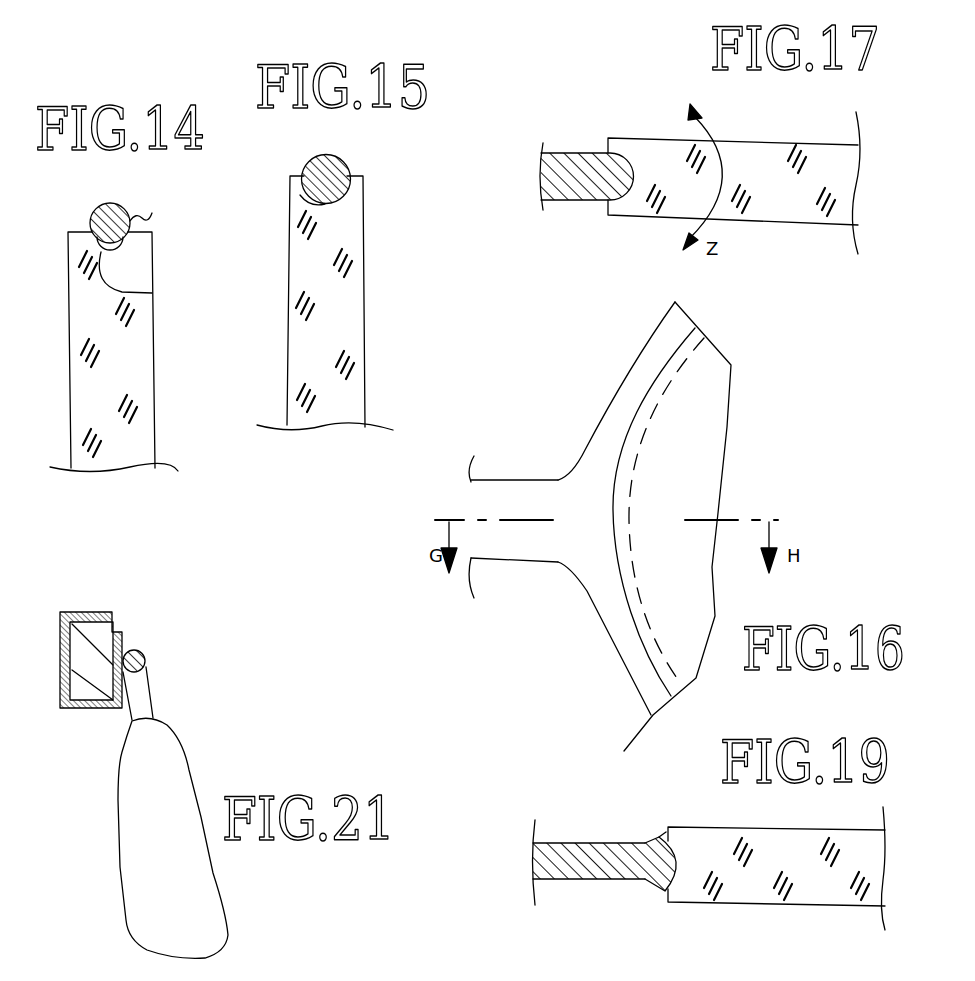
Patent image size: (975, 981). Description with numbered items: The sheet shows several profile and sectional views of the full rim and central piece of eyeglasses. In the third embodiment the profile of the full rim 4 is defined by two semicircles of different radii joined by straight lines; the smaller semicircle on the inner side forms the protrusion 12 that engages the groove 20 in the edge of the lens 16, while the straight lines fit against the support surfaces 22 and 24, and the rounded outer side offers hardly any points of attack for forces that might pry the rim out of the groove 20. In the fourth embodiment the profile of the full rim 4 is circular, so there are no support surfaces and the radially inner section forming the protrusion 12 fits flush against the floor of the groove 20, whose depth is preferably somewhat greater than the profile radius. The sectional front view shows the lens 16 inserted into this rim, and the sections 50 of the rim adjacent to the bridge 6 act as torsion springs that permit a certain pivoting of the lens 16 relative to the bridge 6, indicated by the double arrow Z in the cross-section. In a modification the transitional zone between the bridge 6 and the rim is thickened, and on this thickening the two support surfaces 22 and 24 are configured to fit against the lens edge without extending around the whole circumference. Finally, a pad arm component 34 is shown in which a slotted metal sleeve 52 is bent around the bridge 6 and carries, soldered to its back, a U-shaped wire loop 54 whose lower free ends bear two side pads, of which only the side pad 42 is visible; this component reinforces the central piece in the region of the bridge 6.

In FIG. 14, the full rim 4 is at (113, 202).
In FIG. 15, the full rim 4 is at (355, 163).
In FIG. 16, the full rim 4 is at (614, 677).
In FIG. 16, the bridge 6 is at (500, 496).
In FIG. 19, the bridge 6 is at (570, 855).
In FIG. 21, the bridge 6 is at (93, 637).
In FIG. 14, the protrusion 12 is at (102, 250).
In FIG. 15, the protrusion 12 is at (310, 174).
In FIG. 17, the protrusion 12 is at (621, 207).
In FIG. 19, the protrusion 12 is at (673, 893).
In FIG. 14, the right lens 16 is at (131, 355).
In FIG. 15, the right lens 16 is at (293, 339).
In FIG. 17, the right lens 16 is at (775, 209).
In FIG. 16, the right lens 16 is at (705, 566).
In FIG. 19, the right lens 16 is at (773, 843).
In FIG. 14, the groove 20 is at (152, 293).
In FIG. 15, the groove 20 is at (313, 206).
In FIG. 19, the support surface 22 is at (659, 836).
In FIG. 14, the support surface 24 is at (91, 222).
In FIG. 19, the support surface 24 is at (662, 884).
In FIG. 21, the pad arm component 34 is at (186, 746).
In FIG. 21, the side pad 42 is at (177, 790).
In FIG. 16, the sections of the full rim 50 is at (606, 406).
In FIG. 21, the slotted metal sleeve 52 is at (83, 708).
In FIG. 21, the U-shaped wire loop 54 is at (150, 688).